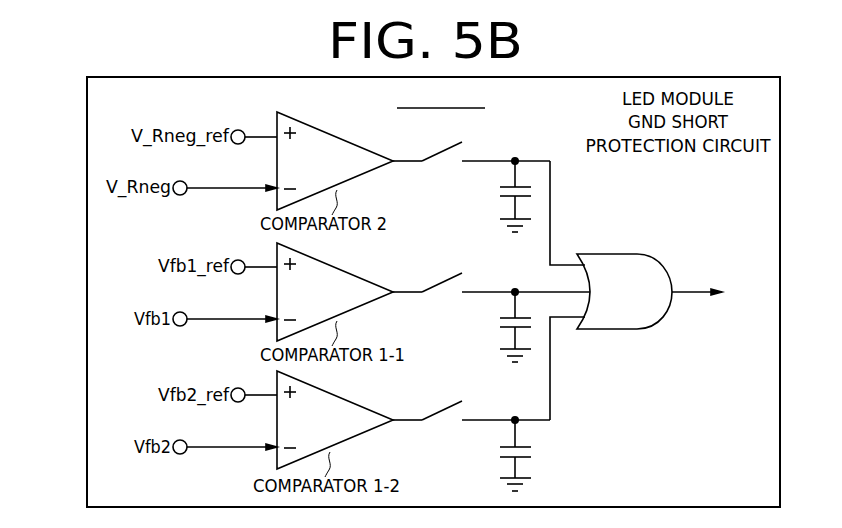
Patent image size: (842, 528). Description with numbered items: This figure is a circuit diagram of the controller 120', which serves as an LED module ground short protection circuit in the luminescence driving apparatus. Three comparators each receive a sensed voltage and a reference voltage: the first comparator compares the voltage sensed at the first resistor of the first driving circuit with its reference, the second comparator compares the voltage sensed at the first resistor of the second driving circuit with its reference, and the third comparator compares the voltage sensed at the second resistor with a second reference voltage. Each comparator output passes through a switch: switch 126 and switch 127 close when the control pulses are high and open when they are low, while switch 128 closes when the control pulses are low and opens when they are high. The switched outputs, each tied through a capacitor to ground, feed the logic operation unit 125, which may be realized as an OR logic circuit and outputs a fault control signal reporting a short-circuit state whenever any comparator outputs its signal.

The controller 120' is at (400, 292).
The logic operation unit 125 is at (607, 330).
The switch 126 is at (441, 417).
The switch 127 is at (441, 289).
The switch 128 is at (441, 158).